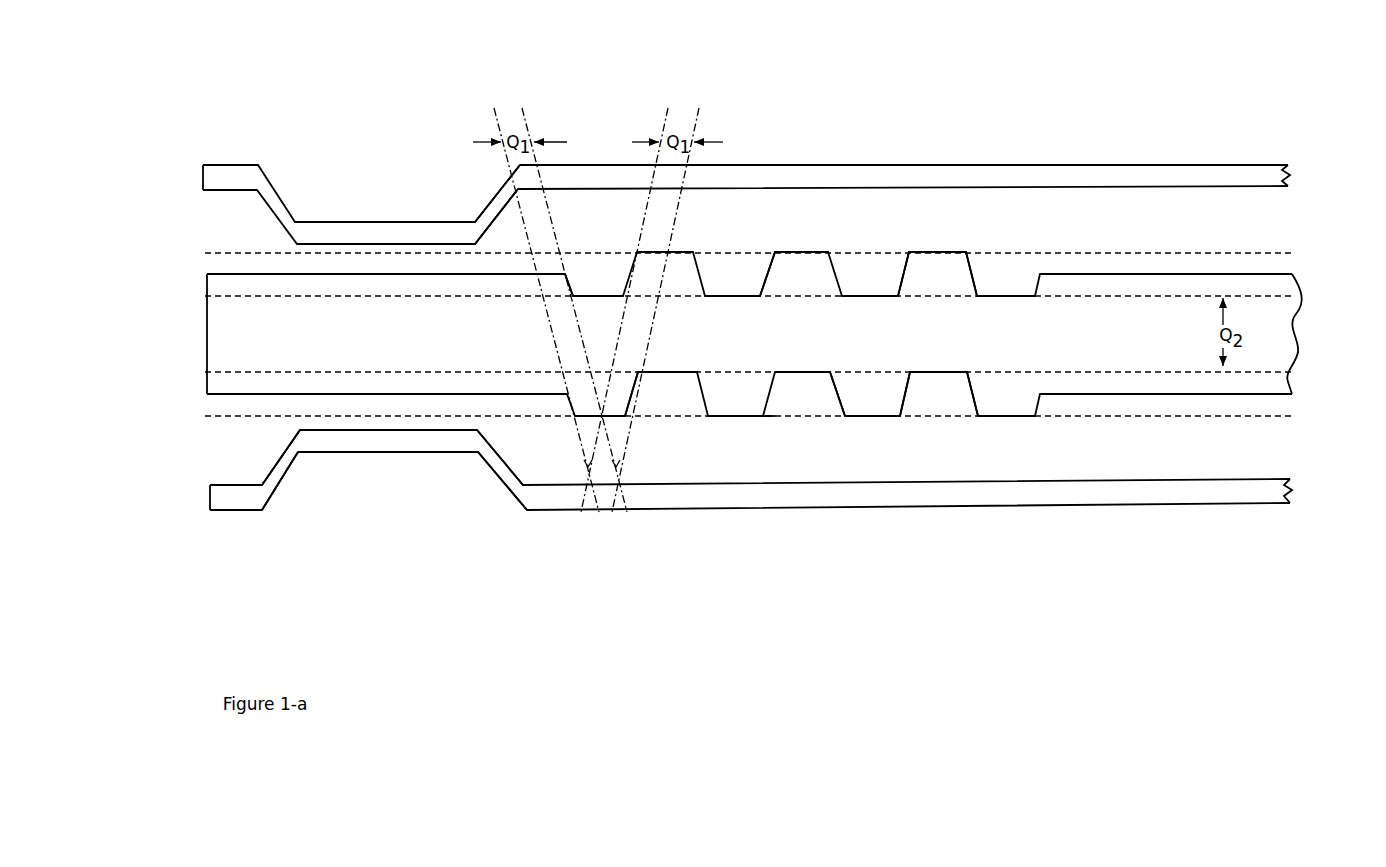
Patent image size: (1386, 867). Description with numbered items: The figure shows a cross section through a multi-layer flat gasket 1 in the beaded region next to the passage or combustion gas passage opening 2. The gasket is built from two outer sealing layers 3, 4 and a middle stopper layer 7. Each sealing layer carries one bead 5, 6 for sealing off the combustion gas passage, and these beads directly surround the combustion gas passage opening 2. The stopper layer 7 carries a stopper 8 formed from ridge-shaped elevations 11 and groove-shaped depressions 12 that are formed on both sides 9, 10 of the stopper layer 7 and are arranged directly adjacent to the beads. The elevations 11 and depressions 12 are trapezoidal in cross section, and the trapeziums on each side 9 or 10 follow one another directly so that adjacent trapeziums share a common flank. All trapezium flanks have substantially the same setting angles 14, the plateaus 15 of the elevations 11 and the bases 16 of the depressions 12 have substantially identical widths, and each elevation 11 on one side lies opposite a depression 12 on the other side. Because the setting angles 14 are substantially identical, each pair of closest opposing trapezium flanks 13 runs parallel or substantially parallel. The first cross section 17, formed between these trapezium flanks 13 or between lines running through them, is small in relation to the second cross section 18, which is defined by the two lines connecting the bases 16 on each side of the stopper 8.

The multi-layer flat gasket 1 is at (145, 140).
The combustion gas passage opening 2 is at (720, 334).
The sealing layer 3 is at (1210, 173).
The sealing layer 4 is at (1192, 492).
The bead 5 is at (463, 230).
The bead 6 is at (345, 440).
The stopper layer 7 is at (533, 352).
The stopper 8 is at (725, 360).
The side of stopper layer 9 is at (422, 395).
The side of stopper layer 10 is at (419, 273).
The ridge-shaped elevation 11 is at (781, 263).
The groove-shaped depression 12 is at (747, 283).
The trapezium flank 13 is at (905, 407).
The setting angle 14 is at (944, 294).
The plateau 15 is at (809, 252).
The base 16 is at (606, 297).
The cross section Q1 17 is at (525, 160).
The cross section Q2 18 is at (1245, 335).